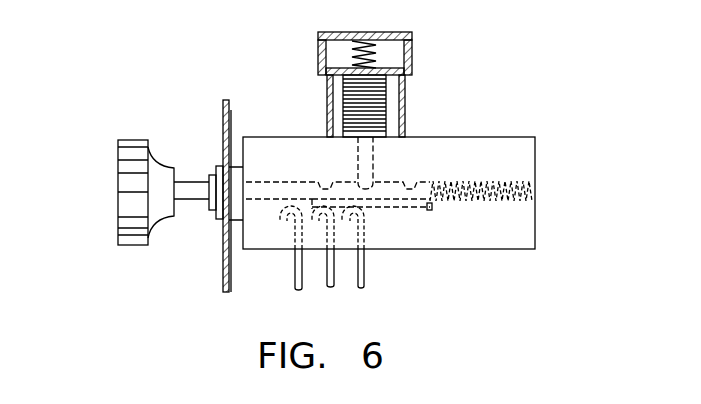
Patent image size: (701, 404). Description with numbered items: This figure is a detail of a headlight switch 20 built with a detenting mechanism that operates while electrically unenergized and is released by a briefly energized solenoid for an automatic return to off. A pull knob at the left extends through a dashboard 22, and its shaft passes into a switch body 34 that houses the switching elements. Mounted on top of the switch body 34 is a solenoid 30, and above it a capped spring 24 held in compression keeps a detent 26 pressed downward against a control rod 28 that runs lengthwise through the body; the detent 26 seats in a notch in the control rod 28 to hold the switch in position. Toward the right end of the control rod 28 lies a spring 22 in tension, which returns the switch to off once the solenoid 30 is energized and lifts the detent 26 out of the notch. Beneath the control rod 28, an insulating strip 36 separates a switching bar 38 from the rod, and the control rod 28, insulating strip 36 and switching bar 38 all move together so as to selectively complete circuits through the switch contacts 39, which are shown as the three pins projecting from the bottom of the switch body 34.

The headlight switch 20 is at (102, 262).
The dashboard / spring in tension 22 is at (221, 112).
The spring 24 is at (378, 45).
The detent 26 is at (375, 159).
The control rod 28 is at (272, 183).
The solenoid 30 is at (387, 108).
The switch body 34 is at (536, 222).
The insulating strip 36 is at (432, 208).
The switching bar 38 is at (407, 210).
The switch contacts 39 is at (363, 289).